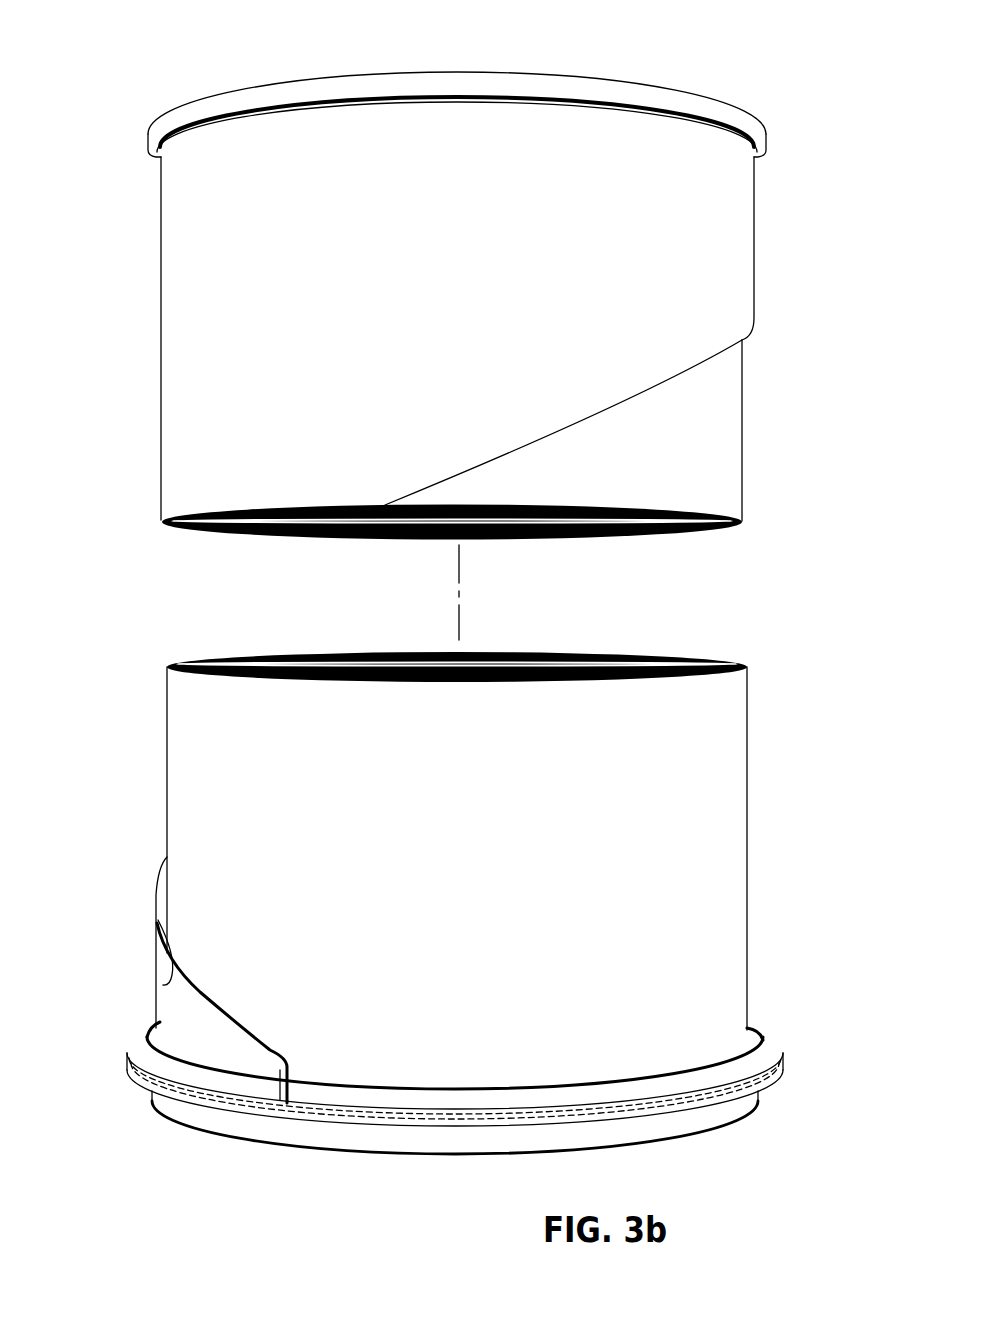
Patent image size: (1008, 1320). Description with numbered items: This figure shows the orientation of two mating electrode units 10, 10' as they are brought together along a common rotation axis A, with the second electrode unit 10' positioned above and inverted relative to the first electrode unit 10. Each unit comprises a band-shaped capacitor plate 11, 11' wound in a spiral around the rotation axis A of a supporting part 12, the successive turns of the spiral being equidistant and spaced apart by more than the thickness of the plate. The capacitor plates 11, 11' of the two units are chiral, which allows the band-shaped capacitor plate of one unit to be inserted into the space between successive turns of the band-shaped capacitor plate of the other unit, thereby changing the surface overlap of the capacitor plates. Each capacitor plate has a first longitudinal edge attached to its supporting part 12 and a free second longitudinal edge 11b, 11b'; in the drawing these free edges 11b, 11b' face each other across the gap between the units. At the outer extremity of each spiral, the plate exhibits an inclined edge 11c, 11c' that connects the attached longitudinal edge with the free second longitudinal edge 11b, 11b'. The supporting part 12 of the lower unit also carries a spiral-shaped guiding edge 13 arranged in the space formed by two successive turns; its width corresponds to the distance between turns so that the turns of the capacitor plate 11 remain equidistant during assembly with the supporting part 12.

The electrode unit 10' is at (466, 279).
The electrode unit 10 is at (459, 928).
The band-shaped capacitor plate 11' is at (500, 308).
The band-shaped capacitor plate 11 is at (496, 848).
The second longitudinal edge 11b' is at (410, 532).
The second longitudinal edge 11b is at (422, 662).
The inclined edge 11c' is at (620, 428).
The inclined edge 11c is at (165, 980).
The supporting part 12 is at (625, 90).
The guiding edge 13 is at (735, 1071).
The rotation axis A is at (459, 597).